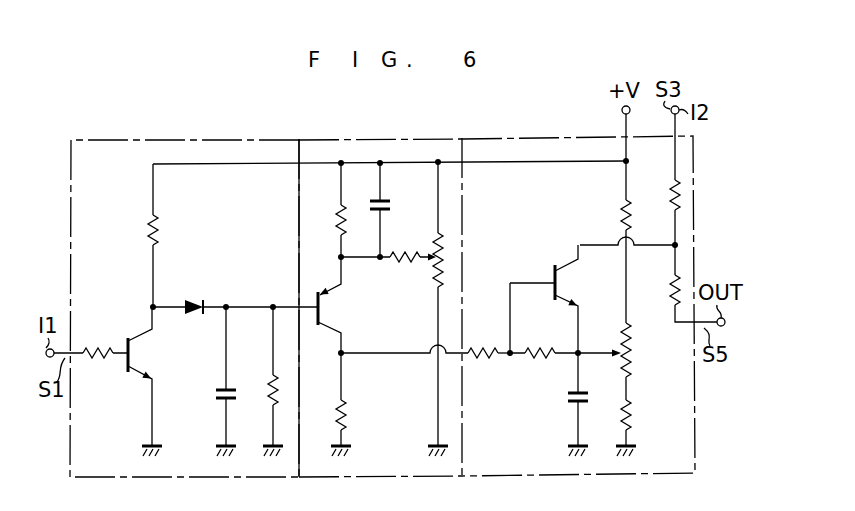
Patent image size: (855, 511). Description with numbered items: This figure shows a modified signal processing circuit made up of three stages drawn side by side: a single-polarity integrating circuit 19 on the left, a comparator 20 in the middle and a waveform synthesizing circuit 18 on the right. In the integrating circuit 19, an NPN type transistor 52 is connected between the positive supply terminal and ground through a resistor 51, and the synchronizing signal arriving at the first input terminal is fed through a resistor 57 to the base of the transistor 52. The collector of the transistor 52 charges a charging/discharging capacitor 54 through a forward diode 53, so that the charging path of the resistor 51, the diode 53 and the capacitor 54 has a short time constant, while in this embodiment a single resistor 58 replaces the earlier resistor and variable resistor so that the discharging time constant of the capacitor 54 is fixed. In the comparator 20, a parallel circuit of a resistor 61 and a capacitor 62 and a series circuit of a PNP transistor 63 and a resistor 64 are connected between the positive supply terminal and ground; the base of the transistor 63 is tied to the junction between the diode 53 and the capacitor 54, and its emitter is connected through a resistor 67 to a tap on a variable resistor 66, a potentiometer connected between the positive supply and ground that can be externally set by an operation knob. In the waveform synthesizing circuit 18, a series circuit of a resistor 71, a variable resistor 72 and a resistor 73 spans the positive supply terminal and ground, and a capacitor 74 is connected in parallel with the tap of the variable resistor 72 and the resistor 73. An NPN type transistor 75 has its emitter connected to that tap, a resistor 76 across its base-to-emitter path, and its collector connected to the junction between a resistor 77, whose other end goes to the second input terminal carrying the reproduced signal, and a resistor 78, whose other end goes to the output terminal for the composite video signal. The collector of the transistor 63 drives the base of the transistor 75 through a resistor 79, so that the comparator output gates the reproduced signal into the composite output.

The waveform synthesizing circuit 18 is at (551, 137).
The single-polarity integrating circuit 19 is at (247, 140).
The comparator 20 is at (408, 138).
The resistor 51 is at (160, 230).
The NPN type transistor 52 is at (138, 358).
The forward diode 53 is at (194, 285).
The charging/discharging capacitor 54 is at (215, 398).
The resistor 57 is at (97, 349).
The resistor 58 is at (266, 390).
The resistor 61 is at (335, 224).
The capacitor 62 is at (392, 210).
The PNP transistor 63 is at (337, 318).
The resistor 64 is at (352, 408).
The variable resistor 66 is at (446, 243).
The resistor 67 is at (402, 266).
The resistor 71 is at (622, 209).
The variable resistor 72 is at (630, 354).
The resistor 73 is at (630, 418).
The capacitor 74 is at (565, 400).
The NPN type transistor 75 is at (573, 285).
The resistor 76 is at (531, 363).
The resistor 77 is at (684, 205).
The resistor 78 is at (684, 296).
The resistor 79 is at (485, 337).